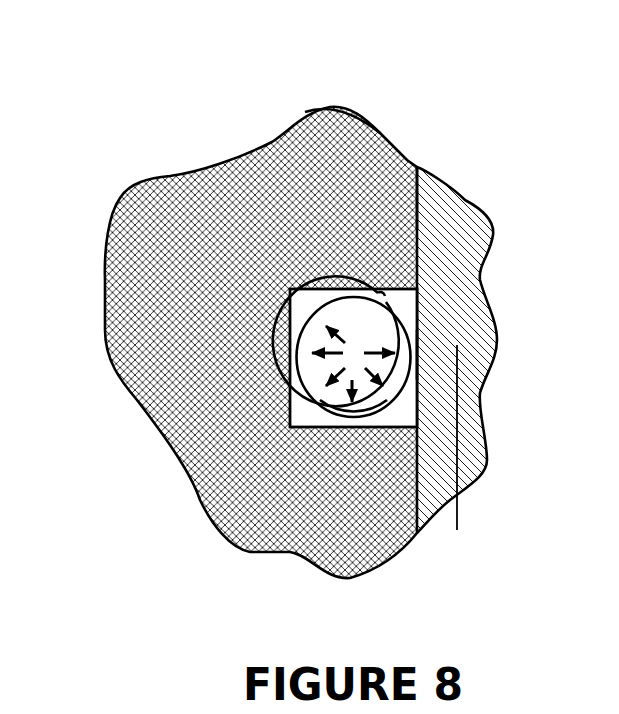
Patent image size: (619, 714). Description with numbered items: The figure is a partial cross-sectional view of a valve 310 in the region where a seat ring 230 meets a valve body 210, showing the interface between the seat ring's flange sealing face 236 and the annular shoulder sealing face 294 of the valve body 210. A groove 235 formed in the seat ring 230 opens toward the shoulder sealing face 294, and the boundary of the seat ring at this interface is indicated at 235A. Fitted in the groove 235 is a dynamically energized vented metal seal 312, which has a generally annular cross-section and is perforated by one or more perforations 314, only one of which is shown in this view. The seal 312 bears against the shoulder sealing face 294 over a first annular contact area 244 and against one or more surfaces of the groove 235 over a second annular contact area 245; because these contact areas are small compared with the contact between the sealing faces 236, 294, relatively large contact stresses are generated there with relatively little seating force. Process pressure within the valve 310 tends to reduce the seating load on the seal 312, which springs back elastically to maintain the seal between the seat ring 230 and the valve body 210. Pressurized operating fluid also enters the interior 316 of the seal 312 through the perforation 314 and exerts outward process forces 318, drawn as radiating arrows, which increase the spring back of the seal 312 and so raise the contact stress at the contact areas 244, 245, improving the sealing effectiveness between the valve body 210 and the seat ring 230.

The valve 310 is at (292, 80).
The seat ring 230 is at (210, 478).
The valve body 210 is at (470, 260).
The shoulder sealing face 294 is at (386, 134).
The housing interface line 235A is at (290, 312).
The groove 235 is at (290, 408).
The flange sealing face 236 is at (420, 227).
The perforation 314 is at (391, 287).
The interior of seal 316 is at (374, 329).
The vented metal seal 312 is at (404, 315).
The first annular contact area 244 is at (428, 351).
The second annular contact area 245 is at (280, 350).
The outward process forces 318 is at (355, 390).